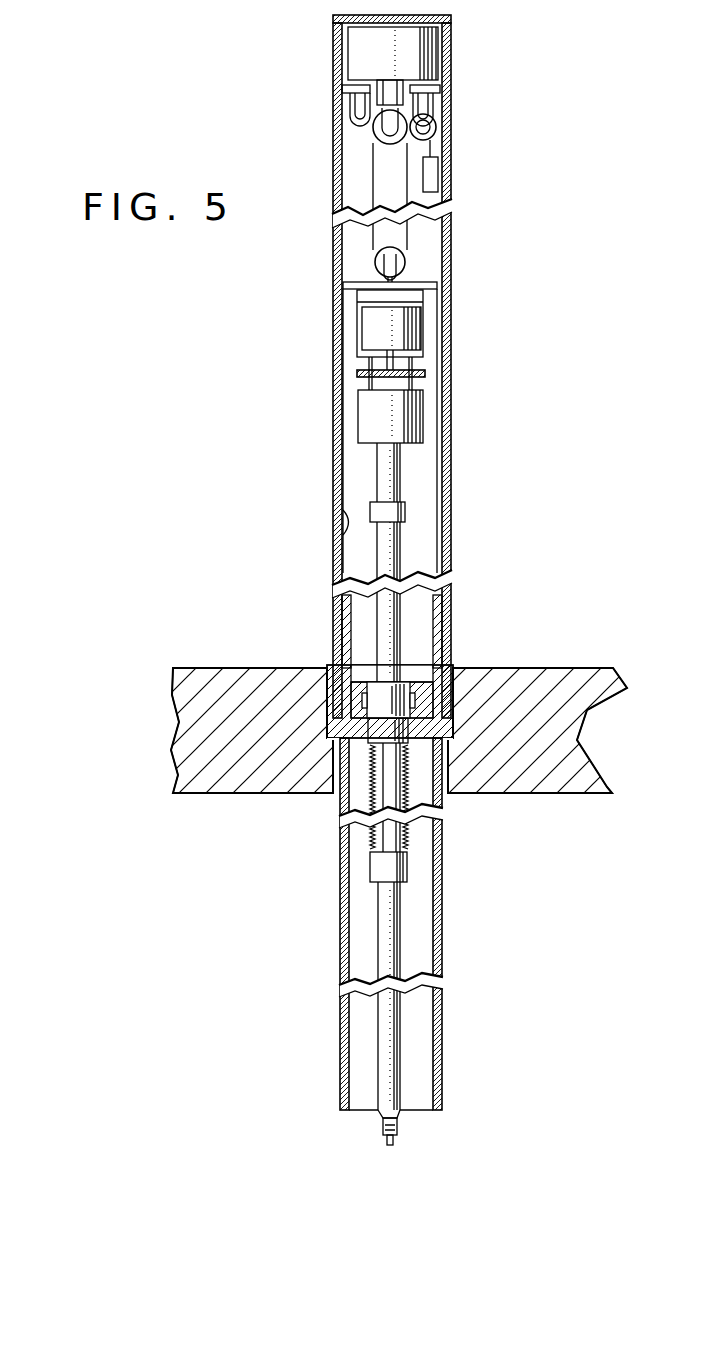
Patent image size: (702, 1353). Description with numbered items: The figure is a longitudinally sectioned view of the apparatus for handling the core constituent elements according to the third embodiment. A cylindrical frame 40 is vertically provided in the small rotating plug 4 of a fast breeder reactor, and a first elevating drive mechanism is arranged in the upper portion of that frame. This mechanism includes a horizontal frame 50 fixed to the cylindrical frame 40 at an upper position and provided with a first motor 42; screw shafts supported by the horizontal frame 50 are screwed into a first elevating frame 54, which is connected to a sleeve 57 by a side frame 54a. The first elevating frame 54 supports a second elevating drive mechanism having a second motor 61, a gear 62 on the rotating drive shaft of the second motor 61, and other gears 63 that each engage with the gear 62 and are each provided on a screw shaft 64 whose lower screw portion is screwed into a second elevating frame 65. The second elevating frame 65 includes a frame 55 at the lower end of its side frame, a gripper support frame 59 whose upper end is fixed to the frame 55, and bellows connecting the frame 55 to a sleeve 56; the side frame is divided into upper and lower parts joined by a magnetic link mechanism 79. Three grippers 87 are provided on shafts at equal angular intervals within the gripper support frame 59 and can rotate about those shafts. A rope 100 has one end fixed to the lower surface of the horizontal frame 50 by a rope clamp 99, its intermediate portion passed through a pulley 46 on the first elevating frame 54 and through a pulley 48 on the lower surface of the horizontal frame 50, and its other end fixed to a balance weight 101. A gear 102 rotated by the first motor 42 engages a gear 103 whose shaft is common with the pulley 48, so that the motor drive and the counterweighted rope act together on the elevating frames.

The small rotating plug 4 is at (556, 680).
The cylindrical frame 40 is at (452, 256).
The first motor 42 is at (421, 44).
The pulley 46 is at (378, 258).
The pulley 48 is at (430, 124).
The horizontal frame 50 is at (360, 90).
The first elevating frame 54 is at (427, 284).
The side frame 54a is at (343, 532).
The frame 55 is at (407, 866).
The sleeve 56 is at (370, 682).
The sleeve 57 is at (343, 697).
The gripper support frame 59 is at (383, 935).
The second motor 61 is at (372, 317).
The gear 62 is at (393, 400).
The gears 63 is at (360, 373).
The screw shaft 64 is at (365, 383).
The second elevating frame 65 is at (400, 468).
The magnetic link mechanism 79 is at (407, 512).
The grippers 87 is at (388, 1143).
The rope clamp 99 is at (360, 115).
The rope 100 is at (442, 222).
The balance weight 101 is at (432, 175).
The gear 102 is at (385, 130).
The gear 103 is at (440, 104).